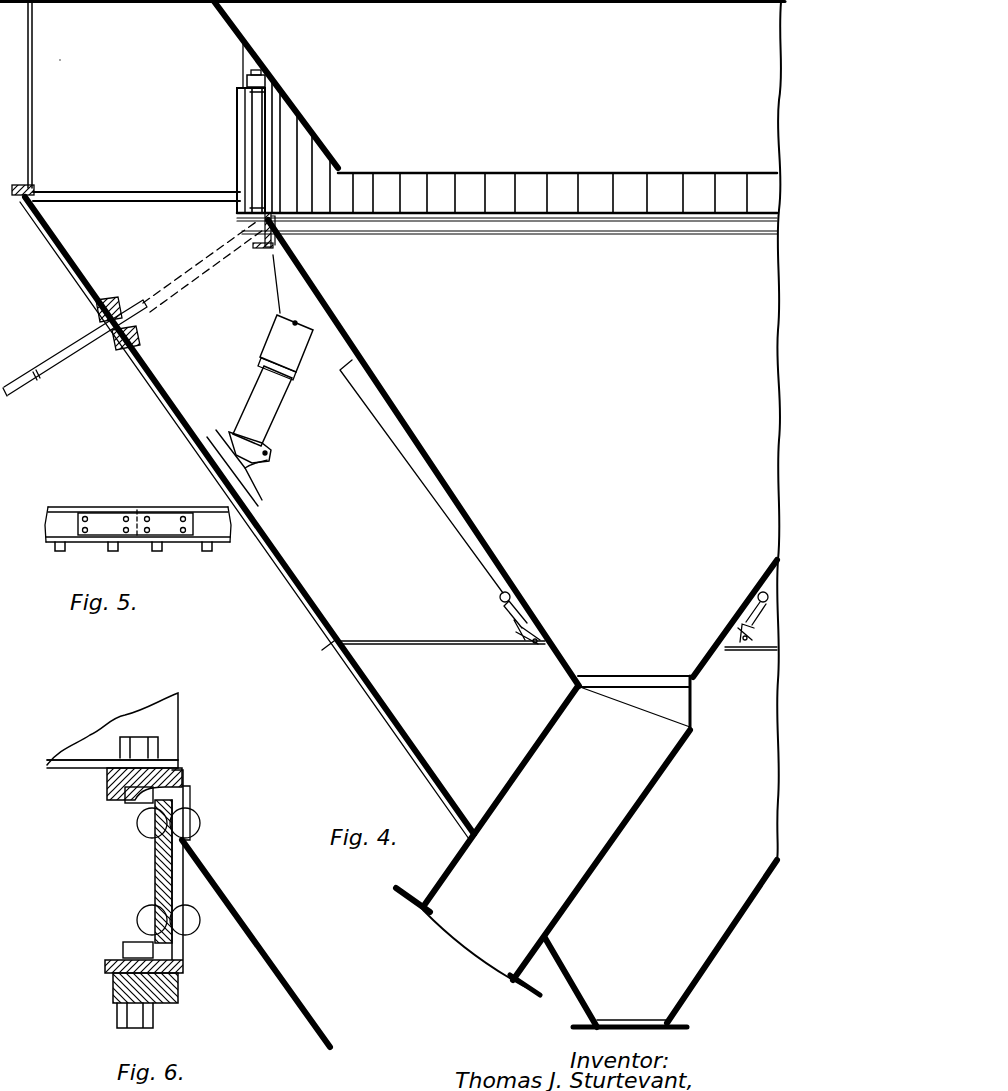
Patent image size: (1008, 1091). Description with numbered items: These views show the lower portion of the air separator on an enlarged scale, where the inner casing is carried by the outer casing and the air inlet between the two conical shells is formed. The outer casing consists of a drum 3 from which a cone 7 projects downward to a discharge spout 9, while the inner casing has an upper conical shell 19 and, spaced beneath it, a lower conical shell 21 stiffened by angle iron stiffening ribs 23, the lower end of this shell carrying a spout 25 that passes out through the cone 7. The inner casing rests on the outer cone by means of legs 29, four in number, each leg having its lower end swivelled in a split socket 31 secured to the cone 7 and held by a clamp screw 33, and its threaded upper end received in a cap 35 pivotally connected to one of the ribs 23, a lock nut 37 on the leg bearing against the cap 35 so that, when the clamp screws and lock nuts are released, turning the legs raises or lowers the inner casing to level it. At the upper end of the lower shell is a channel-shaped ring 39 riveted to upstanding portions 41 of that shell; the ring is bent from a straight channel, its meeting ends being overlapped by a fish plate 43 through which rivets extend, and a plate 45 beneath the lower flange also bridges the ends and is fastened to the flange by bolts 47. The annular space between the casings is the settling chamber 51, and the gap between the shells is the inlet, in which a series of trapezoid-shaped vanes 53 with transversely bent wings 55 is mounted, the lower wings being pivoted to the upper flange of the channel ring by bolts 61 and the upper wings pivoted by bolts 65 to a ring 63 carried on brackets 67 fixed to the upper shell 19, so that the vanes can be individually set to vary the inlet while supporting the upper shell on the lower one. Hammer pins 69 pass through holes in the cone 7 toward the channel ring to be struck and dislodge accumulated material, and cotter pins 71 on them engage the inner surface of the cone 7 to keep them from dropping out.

In FIG. 4, the drum 3 is at (33, 103).
In FIG. 4, the cone 7 is at (314, 608).
In FIG. 4, the discharge spout 9 is at (580, 1010).
In FIG. 4, the upper conical shell 19 is at (235, 30).
In FIG. 4, the lower conical shell 21 is at (434, 466).
In FIG. 6, the lower conical shell 21 is at (245, 918).
In FIG. 4, the angle iron stiffening ribs 23 is at (430, 489).
In FIG. 4, the spout 25 is at (470, 935).
In FIG. 4, the legs 29 is at (258, 393).
In FIG. 4, the split socket 31 is at (247, 473).
In FIG. 4, the clamp screw 33 is at (271, 452).
In FIG. 4, the cap 35 is at (277, 335).
In FIG. 4, the lock nut 37 is at (261, 363).
In FIG. 4, the channel-shaped ring 39 is at (262, 229).
In FIG. 5, the channel-shaped ring 39 is at (90, 500).
In FIG. 6, the channel-shaped ring 39 is at (180, 878).
In FIG. 4, the upstanding portions 41 is at (273, 232).
In FIG. 6, the upstanding portions 41 is at (189, 797).
In FIG. 5, the fish plate 43 is at (160, 518).
In FIG. 6, the fish plate 43 is at (155, 868).
In FIG. 5, the plate 45 is at (100, 548).
In FIG. 6, the plate 45 is at (178, 988).
In FIG. 6, the bolts 47 is at (155, 1012).
In FIG. 4, the settling chamber 51 is at (97, 75).
In FIG. 4, the vanes 53 is at (226, 154).
In FIG. 6, the vanes 53 is at (190, 716).
In FIG. 6, the wings 55 is at (95, 767).
In FIG. 6, the bolts 61 is at (145, 750).
In FIG. 4, the ring 63 is at (246, 82).
In FIG. 4, the bolts 65 is at (252, 96).
In FIG. 4, the brackets 67 is at (240, 60).
In FIG. 4, the hammer pins 69 is at (55, 373).
In FIG. 4, the cotter pins 71 is at (138, 325).